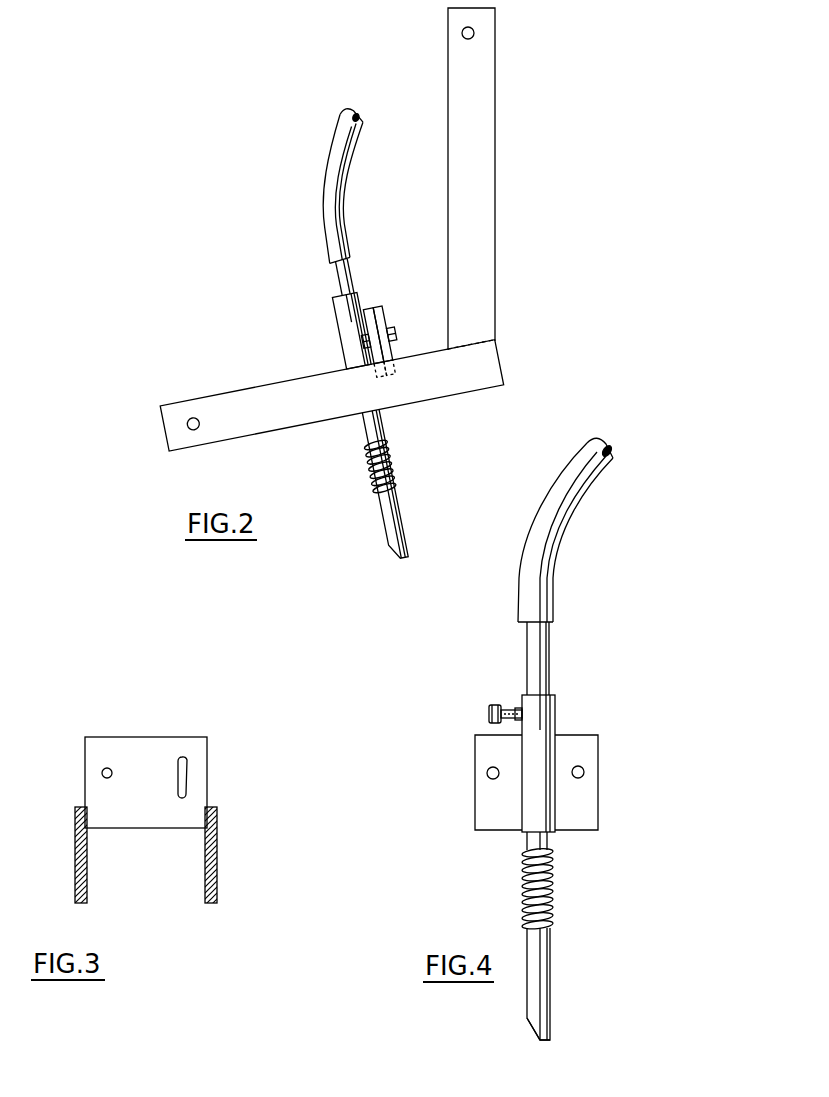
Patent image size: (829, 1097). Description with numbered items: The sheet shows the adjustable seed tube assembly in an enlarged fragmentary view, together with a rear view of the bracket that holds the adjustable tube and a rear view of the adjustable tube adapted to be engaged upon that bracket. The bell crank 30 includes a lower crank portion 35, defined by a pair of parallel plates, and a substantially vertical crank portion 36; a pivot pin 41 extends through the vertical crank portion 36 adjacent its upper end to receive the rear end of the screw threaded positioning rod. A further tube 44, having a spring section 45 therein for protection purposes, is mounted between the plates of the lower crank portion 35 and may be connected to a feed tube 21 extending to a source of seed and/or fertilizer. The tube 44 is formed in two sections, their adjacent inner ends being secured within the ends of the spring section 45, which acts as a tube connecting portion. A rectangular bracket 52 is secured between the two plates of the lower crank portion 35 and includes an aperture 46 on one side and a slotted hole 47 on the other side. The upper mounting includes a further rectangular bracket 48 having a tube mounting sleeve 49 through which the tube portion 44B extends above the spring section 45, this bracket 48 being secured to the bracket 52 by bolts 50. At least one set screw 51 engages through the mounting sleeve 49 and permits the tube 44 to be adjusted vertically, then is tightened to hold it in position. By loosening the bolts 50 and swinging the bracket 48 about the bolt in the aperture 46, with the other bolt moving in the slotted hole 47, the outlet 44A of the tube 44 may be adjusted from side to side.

In FIG. 2, the feed tube 21 is at (342, 122).
In FIG. 4, the feed tube 21 is at (565, 530).
In FIG. 2, the bell crank 30 is at (322, 418).
In FIG. 2, the lower crank portion 35 is at (255, 389).
In FIG. 2, the vertical crank portion 36 is at (495, 203).
In FIG. 2, the pivot pin 41 is at (474, 36).
In FIG. 2, the further tube 44 is at (396, 517).
In FIG. 4, the further tube 44 is at (551, 962).
In FIG. 4, the outlet 44A is at (535, 1036).
In FIG. 4, the tube portion 44B is at (541, 664).
In FIG. 2, the spring section 45 is at (394, 448).
In FIG. 4, the spring section 45 is at (553, 875).
In FIG. 3, the aperture 46 is at (102, 772).
In FIG. 3, the slotted hole 47 is at (190, 767).
In FIG. 2, the rectangular bracket 48 is at (366, 310).
In FIG. 4, the rectangular bracket 48 is at (590, 758).
In FIG. 2, the tube mounting sleeve 49 is at (351, 331).
In FIG. 4, the tube mounting sleeve 49 is at (551, 707).
In FIG. 2, the bolts 50 is at (393, 338).
In FIG. 4, the set screw 51 is at (494, 705).
In FIG. 2, the rectangular bracket 52 is at (380, 305).
In FIG. 3, the rectangular bracket 52 is at (150, 738).